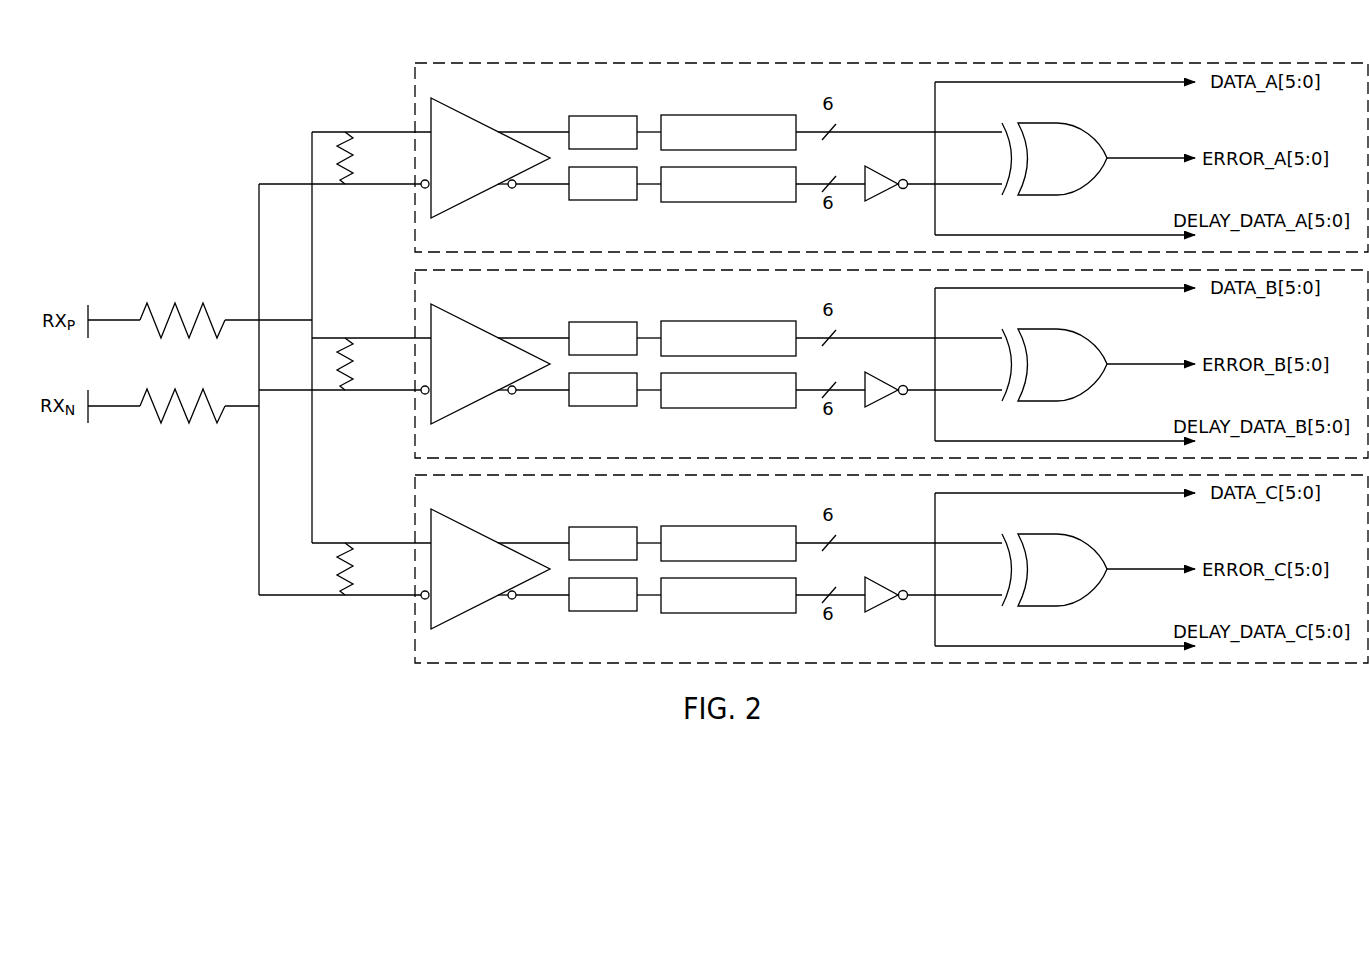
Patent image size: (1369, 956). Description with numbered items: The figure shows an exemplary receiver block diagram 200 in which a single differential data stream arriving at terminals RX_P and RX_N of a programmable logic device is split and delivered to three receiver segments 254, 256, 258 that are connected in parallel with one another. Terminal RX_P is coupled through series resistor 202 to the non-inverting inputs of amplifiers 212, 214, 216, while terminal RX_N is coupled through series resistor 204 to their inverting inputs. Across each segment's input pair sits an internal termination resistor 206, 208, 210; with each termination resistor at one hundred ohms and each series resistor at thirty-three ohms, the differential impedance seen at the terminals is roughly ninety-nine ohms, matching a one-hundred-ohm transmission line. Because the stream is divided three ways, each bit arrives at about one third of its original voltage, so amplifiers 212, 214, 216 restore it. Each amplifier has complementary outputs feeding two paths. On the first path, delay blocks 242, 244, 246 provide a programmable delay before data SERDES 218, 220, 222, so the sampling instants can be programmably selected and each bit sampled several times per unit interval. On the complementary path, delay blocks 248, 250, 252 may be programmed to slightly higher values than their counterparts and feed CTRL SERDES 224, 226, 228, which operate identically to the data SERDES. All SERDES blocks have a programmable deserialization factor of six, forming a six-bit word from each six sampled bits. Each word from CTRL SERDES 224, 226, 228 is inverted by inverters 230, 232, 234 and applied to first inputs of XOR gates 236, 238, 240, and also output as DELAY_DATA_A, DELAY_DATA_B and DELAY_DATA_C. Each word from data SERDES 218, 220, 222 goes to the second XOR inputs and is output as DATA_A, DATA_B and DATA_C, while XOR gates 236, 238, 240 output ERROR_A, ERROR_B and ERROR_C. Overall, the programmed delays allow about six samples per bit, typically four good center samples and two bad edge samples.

The receiver block diagram 200 is at (143, 198).
The resistor 202 is at (150, 318).
The resistor 204 is at (150, 403).
The internal termination resistor 206 is at (345, 178).
The internal termination resistor 208 is at (345, 384).
The internal termination resistor 210 is at (345, 589).
The amplifier 212 is at (447, 103).
The amplifier 214 is at (447, 309).
The amplifier 216 is at (447, 514).
The data SERDES 218 is at (690, 114).
The data SERDES 220 is at (690, 320).
The data SERDES 222 is at (690, 525).
The CTRL SERDES 224 is at (693, 203).
The CTRL SERDES 226 is at (693, 409).
The CTRL SERDES 228 is at (693, 614).
The inverter 230 is at (888, 170).
The inverter 232 is at (888, 376).
The inverter 234 is at (888, 581).
The XOR gate 236 is at (1055, 123).
The XOR gate 238 is at (1055, 329).
The XOR gate 240 is at (1055, 534).
The delay block 242 is at (604, 116).
The delay block 244 is at (604, 322).
The delay block 246 is at (604, 527).
The delay block 248 is at (608, 203).
The delay block 250 is at (608, 409).
The delay block 252 is at (608, 614).
The receiver segment 254 is at (414, 234).
The receiver segment 256 is at (414, 440).
The receiver segment 258 is at (414, 645).